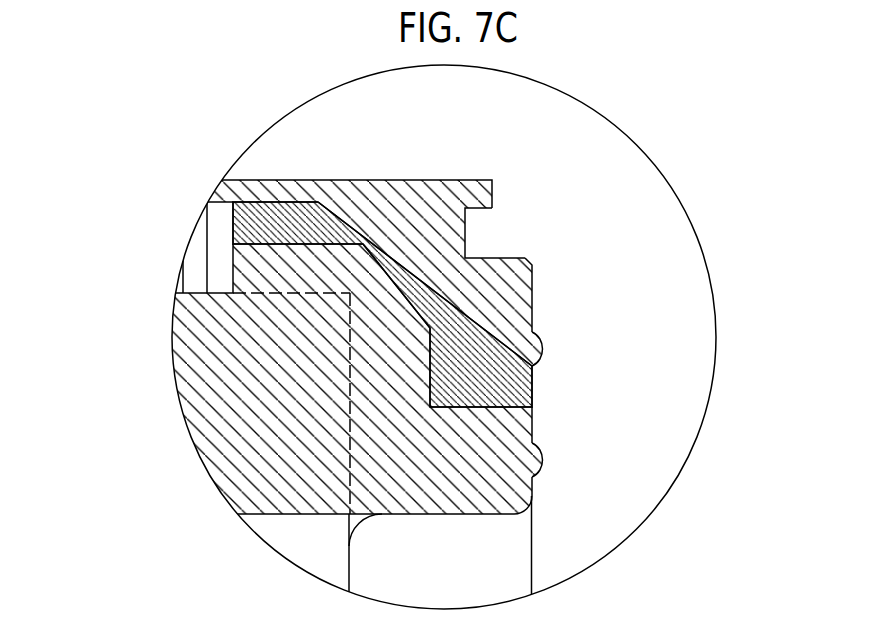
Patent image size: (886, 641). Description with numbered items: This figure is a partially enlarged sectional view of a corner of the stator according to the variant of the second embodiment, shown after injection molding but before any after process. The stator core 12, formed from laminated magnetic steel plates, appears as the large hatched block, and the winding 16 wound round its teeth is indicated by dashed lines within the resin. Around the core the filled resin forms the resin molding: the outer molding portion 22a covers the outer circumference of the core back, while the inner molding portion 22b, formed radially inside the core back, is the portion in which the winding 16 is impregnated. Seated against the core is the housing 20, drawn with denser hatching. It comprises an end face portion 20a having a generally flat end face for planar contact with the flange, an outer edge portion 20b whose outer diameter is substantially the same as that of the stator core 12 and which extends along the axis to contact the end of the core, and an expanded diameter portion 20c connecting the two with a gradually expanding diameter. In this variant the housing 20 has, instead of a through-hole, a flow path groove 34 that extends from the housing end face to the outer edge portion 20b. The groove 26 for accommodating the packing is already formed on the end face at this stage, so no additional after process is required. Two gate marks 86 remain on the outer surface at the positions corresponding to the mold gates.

The stator core 12 is at (197, 262).
The winding 16 is at (350, 423).
The housing 20 is at (511, 377).
The end face portion 20a is at (532, 397).
The outer edge portion 20b is at (290, 222).
The expanded diameter portion 20c is at (405, 275).
The outer molding portion 22a is at (253, 180).
The inner molding portion 22b is at (217, 395).
The groove 26 is at (485, 220).
The flow path groove 34 is at (453, 308).
The gate marks 86 is at (542, 343).